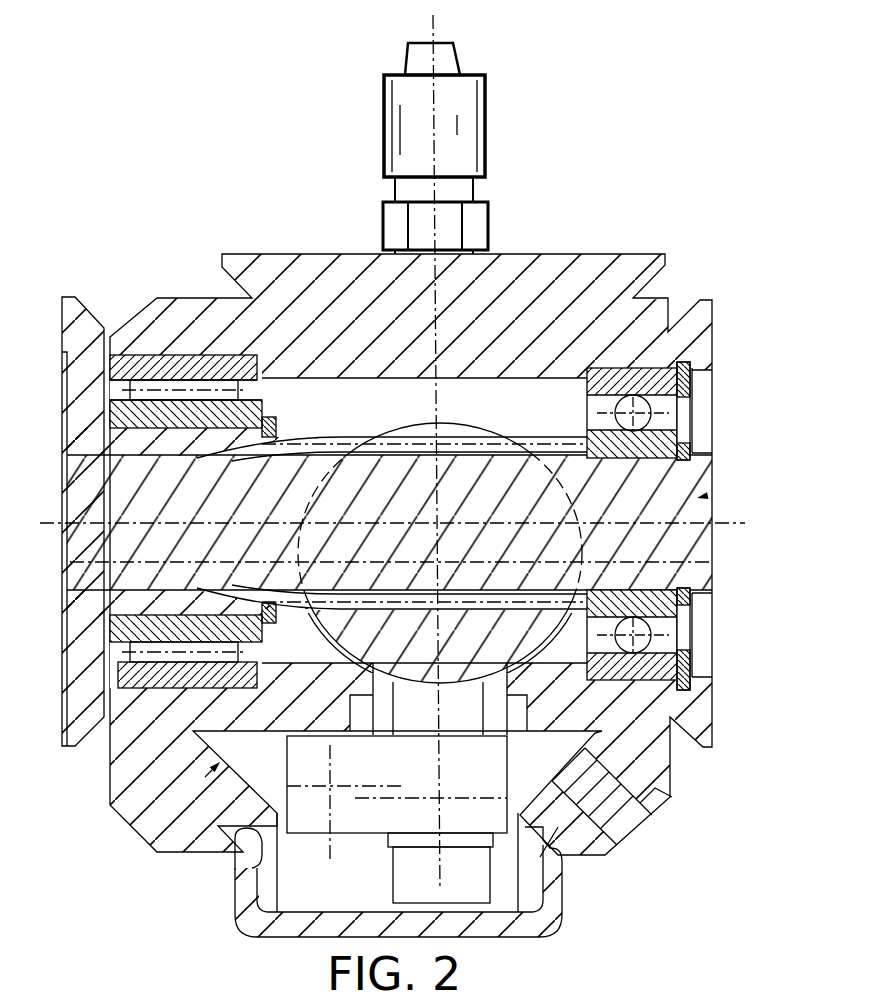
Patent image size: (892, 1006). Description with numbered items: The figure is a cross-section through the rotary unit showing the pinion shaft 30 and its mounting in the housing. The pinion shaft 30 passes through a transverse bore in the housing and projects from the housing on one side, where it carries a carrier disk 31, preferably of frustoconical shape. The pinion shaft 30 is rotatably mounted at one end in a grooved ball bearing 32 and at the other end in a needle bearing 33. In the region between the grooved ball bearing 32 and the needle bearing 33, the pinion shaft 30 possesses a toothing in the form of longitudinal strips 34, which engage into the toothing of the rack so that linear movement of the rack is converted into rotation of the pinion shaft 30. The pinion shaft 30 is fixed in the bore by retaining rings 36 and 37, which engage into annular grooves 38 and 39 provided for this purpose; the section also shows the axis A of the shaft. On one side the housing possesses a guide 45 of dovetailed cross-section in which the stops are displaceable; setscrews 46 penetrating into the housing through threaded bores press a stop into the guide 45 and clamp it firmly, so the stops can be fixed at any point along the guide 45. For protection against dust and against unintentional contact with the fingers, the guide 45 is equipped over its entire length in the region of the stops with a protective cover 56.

The pinion shaft 30 is at (703, 496).
The carrier disk 31 is at (78, 634).
The grooved ball bearing 32 is at (623, 368).
The needle bearing 33 is at (192, 353).
The longitudinal strips 34 is at (543, 437).
The retaining ring 36 is at (692, 447).
The retaining ring 37 is at (268, 415).
The annular groove 38 is at (690, 457).
The annular groove 39 is at (300, 437).
The guide 45 is at (145, 835).
The setscrew 46 is at (618, 833).
The protective cover 56 is at (247, 913).
The axis A is at (748, 526).